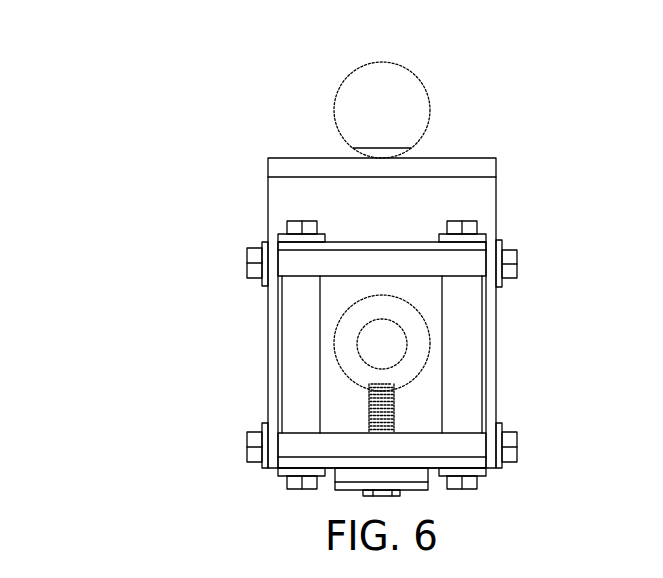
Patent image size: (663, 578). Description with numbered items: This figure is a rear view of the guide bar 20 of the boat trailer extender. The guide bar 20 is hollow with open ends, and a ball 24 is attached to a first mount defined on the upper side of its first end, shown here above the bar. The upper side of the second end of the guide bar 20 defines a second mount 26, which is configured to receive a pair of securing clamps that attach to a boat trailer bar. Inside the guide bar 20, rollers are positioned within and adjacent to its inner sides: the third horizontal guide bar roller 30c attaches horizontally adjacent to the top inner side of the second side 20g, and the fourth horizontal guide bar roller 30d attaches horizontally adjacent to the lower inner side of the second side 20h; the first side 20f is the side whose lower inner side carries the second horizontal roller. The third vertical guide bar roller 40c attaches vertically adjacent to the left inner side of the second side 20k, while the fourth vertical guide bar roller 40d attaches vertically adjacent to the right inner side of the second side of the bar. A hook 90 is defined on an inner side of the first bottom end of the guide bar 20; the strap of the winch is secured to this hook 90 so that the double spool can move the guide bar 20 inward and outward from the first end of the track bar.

The guide bar 20 is at (138, 205).
The ball 24 is at (392, 117).
The second mount 26 is at (480, 203).
The third horizontal guide bar roller 30c is at (448, 265).
The fourth horizontal guide bar roller 30d is at (462, 440).
The first side 20f is at (485, 352).
The second side 20g is at (317, 253).
The second side 20h is at (295, 467).
The second side 20k is at (280, 350).
The third vertical guide bar roller 40c is at (298, 407).
The fourth vertical guide bar roller 40d is at (463, 402).
The hook 90 is at (350, 325).